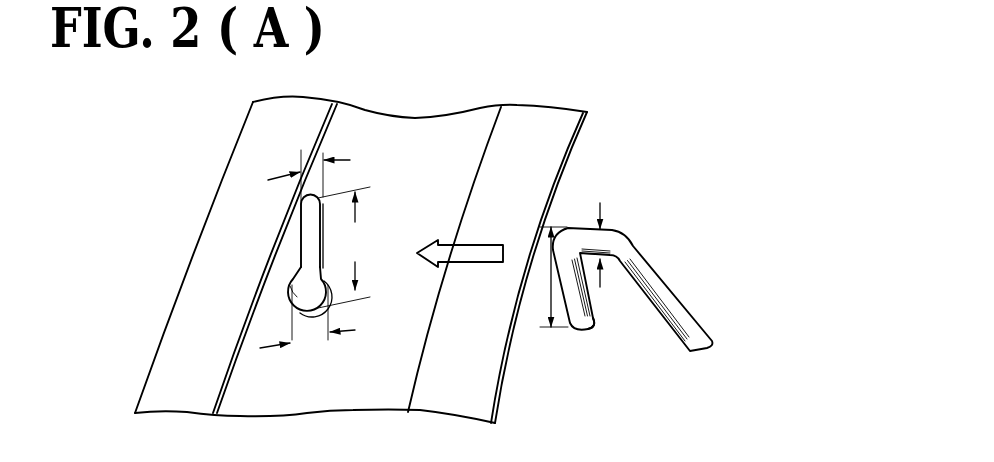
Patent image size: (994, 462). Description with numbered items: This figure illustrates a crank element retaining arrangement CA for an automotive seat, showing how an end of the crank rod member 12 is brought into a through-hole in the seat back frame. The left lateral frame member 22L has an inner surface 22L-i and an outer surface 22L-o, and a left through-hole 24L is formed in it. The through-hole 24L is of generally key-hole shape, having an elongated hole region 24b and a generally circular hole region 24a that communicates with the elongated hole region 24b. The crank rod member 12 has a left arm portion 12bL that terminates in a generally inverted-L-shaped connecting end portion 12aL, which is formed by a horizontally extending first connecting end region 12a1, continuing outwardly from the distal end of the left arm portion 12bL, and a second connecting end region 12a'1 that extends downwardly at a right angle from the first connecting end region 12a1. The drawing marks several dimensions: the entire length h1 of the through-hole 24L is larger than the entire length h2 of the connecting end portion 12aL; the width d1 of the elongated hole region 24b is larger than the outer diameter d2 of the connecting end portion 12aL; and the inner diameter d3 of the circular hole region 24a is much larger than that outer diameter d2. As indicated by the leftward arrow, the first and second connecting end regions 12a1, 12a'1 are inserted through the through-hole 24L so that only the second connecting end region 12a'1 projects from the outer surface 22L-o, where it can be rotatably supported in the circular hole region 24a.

The left lateral frame member 22L is at (248, 193).
The inner surface of the left lateral frame member 22L-i is at (395, 128).
The outer surface of the left lateral frame member 22L-o is at (160, 340).
The left through-hole 24L is at (377, 212).
The circular hole region 24a is at (300, 292).
The elongated hole region 24b is at (309, 228).
The crank rod member 12 is at (680, 290).
The first connecting end region 12a1 is at (617, 232).
The second connecting end region 12a'1 is at (693, 359).
The inverted-L-shaped connecting end portion 12aL is at (577, 367).
The left arm portion 12bL is at (695, 311).
The crank element retaining arrangement CA is at (663, 100).
The width of the elongated hole region d1 is at (324, 168).
The outer diameter of the inverted-L-shaped connecting end portion d2 is at (599, 230).
The inner diameter of the circular hole region d3 is at (307, 320).
The entire length of the through-hole h1 is at (345, 247).
The entire length of the inverted-L-shaped connecting end portion h2 is at (548, 300).